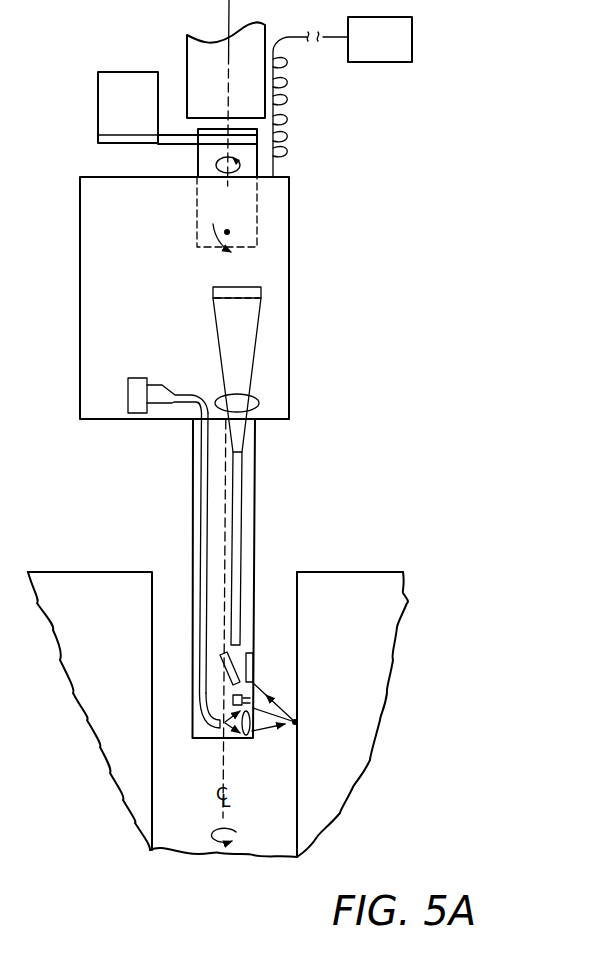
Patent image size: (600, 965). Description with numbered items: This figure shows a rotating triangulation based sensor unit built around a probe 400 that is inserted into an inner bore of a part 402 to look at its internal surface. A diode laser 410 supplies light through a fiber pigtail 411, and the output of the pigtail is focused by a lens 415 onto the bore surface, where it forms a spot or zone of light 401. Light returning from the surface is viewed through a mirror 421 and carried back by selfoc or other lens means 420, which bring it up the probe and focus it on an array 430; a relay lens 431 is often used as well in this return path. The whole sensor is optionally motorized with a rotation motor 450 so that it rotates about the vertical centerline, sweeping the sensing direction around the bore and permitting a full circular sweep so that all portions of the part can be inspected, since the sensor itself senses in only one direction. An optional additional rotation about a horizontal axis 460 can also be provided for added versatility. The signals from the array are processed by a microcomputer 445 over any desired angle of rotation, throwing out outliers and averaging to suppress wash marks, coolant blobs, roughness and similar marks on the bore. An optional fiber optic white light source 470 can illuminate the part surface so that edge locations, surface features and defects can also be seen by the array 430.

The probe 400 is at (255, 542).
The spot or zone of light 401 is at (297, 722).
The part 402 is at (297, 632).
The diode laser 410 is at (137, 378).
The fiber pigtail 411 is at (205, 492).
The lens 415 is at (252, 740).
The selfoc or other lens means 420 is at (242, 480).
The mirror 421 is at (220, 661).
The array 430 is at (262, 297).
The relay lens 431 is at (262, 401).
The microcomputer 445 is at (402, 50).
The rotation motor 450 is at (152, 122).
The horizontal axis 460 is at (229, 232).
The white light source 470 is at (233, 700).